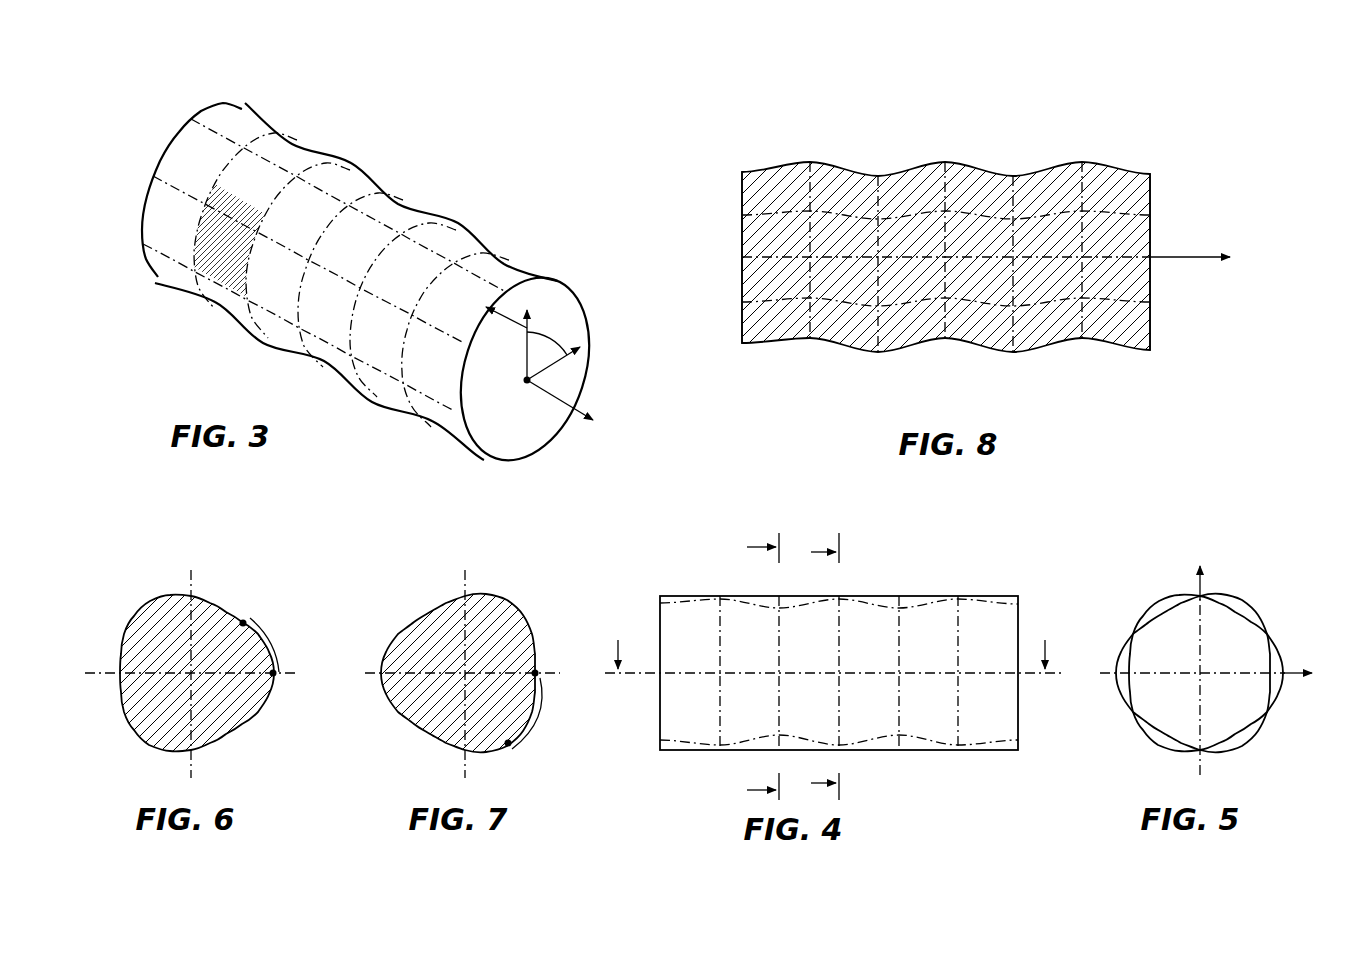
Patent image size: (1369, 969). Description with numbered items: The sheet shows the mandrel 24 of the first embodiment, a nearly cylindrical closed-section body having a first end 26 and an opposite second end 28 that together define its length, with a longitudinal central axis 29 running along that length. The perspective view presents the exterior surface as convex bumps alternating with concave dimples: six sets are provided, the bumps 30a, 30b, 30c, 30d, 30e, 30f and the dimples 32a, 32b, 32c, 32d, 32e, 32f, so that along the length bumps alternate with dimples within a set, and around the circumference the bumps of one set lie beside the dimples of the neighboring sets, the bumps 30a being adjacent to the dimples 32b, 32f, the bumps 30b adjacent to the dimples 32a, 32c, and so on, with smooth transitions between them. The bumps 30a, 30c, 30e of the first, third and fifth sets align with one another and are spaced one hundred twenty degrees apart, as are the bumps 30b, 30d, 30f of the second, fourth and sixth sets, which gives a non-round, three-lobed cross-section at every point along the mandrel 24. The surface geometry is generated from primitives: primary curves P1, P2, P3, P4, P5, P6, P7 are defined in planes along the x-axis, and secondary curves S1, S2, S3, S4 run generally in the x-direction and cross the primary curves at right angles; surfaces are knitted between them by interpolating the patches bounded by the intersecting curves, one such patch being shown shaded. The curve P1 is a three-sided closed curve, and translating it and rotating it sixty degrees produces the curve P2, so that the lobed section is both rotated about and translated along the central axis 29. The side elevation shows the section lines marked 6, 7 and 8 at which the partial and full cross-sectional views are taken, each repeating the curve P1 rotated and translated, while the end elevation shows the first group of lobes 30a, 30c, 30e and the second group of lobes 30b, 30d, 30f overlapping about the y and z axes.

In FIG. 3, the mandrel 24 is at (490, 148).
In FIG. 3, the first end 26 is at (585, 368).
In FIG. 8, the first end 26 is at (1151, 282).
In FIG. 3, the second end 28 is at (160, 180).
In FIG. 8, the second end 28 is at (742, 240).
In FIG. 3, the longitudinal central axis 29 is at (549, 402).
In FIG. 8, the longitudinal central axis 29 is at (995, 257).
In FIG. 6, the longitudinal central axis 29 is at (193, 671).
In FIG. 7, the longitudinal central axis 29 is at (468, 670).
In FIG. 4, the longitudinal central axis 29 is at (654, 676).
In FIG. 5, the longitudinal central axis 29 is at (1214, 657).
In FIG. 3, the bumps of the first set 30a is at (244, 107).
In FIG. 7, the bumps of the first set 30a is at (505, 600).
In FIG. 5, the bumps of the first set 30a is at (1240, 602).
In FIG. 3, the bumps of the second set 30b is at (443, 327).
In FIG. 6, the bumps of the second set 30b is at (150, 600).
In FIG. 5, the bumps of the second set 30b is at (1163, 600).
In FIG. 3, the bumps of the third set 30c is at (143, 240).
In FIG. 8, the bumps of the third set 30c is at (742, 346).
In FIG. 7, the bumps of the third set 30c is at (382, 673).
In FIG. 5, the bumps of the third set 30c is at (1118, 680).
In FIG. 6, the bumps of the fourth set 30d is at (155, 745).
In FIG. 5, the bumps of the fourth set 30d is at (1152, 746).
In FIG. 5, the bumps of the fifth set 30e is at (1248, 748).
In FIG. 8, the bumps of the sixth set 30f is at (809, 160).
In FIG. 6, the bumps of the sixth set 30f is at (274, 676).
In FIG. 5, the bumps of the sixth set 30f is at (1282, 688).
In FIG. 3, the dimples of the first set 32a is at (295, 146).
In FIG. 3, the dimples of the second set 32b is at (177, 150).
In FIG. 7, the dimples of the second set 32b is at (420, 616).
In FIG. 5, the dimples of the second set 32b is at (1152, 612).
In FIG. 3, the dimples of the third set 32c is at (190, 300).
In FIG. 8, the dimples of the third set 32c is at (810, 340).
In FIG. 6, the dimples of the third set 32c is at (121, 673).
In FIG. 7, the dimples of the fourth set 32d is at (425, 730).
In FIG. 5, the dimples of the fourth set 32d is at (1163, 748).
In FIG. 6, the dimples of the fifth set 32e is at (235, 722).
In FIG. 8, the dimples of the sixth set 32f is at (742, 170).
In FIG. 7, the dimples of the sixth set 32f is at (537, 672).
In FIG. 5, the dimples of the sixth set 32f is at (1278, 656).
In FIG. 3, the primary curve P1 is at (218, 114).
In FIG. 6, the primary curve P1 is at (275, 638).
In FIG. 7, the primary curve P1 is at (543, 726).
In FIG. 4, the primary curve P1 is at (660, 583).
In FIG. 3, the primary curve P2 is at (258, 149).
In FIG. 4, the primary curve P2 is at (720, 660).
In FIG. 3, the primary curve P3 is at (306, 185).
In FIG. 4, the primary curve P3 is at (779, 660).
In FIG. 3, the primary curve P4 is at (352, 215).
In FIG. 4, the primary curve P4 is at (839, 660).
In FIG. 3, the primary curve P5 is at (409, 250).
In FIG. 4, the primary curve P5 is at (899, 660).
In FIG. 3, the primary curve P6 is at (461, 280).
In FIG. 4, the primary curve P6 is at (958, 660).
In FIG. 3, the primary curve P7 is at (530, 291).
In FIG. 4, the primary curve P7 is at (1018, 583).
In FIG. 3, the secondary curve S1 is at (281, 128).
In FIG. 8, the secondary curve S1 is at (980, 168).
In FIG. 3, the secondary curve S2 is at (198, 168).
In FIG. 3, the secondary curve S3 is at (156, 278).
In FIG. 8, the secondary curve S4 is at (984, 354).
In FIG. 4, the section line for FIG. 6 is at (754, 667).
In FIG. 4, the section line for FIG. 7 is at (816, 666).
In FIG. 4, the section line for FIG. 8 is at (832, 642).